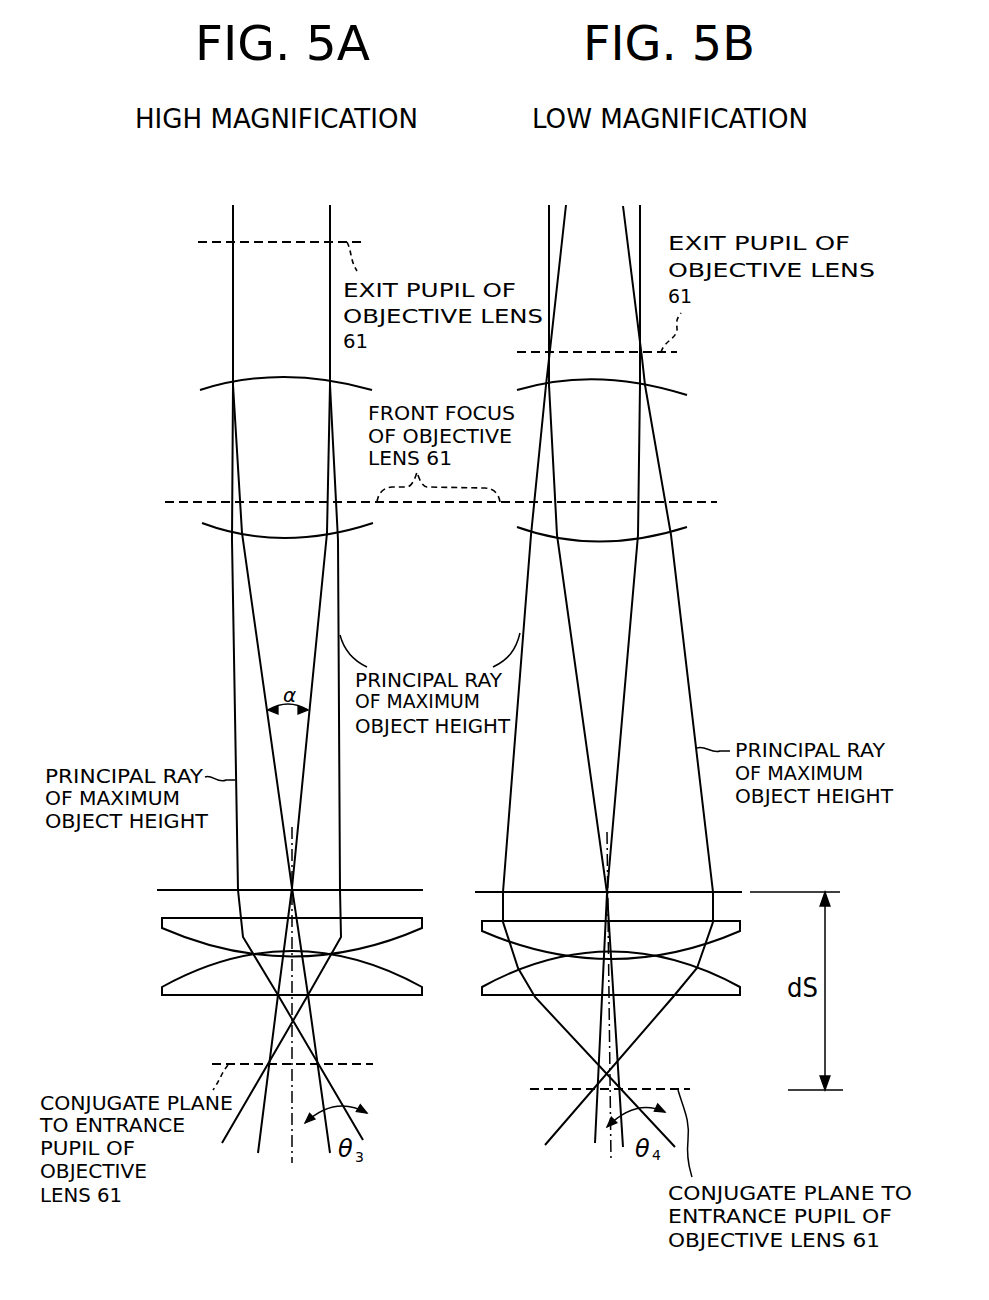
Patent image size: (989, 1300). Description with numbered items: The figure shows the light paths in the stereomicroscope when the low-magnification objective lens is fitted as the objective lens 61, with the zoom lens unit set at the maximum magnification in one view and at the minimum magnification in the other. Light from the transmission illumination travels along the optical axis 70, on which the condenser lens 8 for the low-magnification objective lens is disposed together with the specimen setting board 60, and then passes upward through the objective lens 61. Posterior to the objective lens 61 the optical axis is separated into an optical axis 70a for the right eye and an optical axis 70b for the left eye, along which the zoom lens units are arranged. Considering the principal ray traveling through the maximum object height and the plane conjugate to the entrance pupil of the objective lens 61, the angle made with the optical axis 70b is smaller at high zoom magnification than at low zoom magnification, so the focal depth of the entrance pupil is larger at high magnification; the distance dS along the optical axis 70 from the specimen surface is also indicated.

In FIG. 5A, the optical axis for right eye 70a is at (330, 352).
In FIG. 5B, the optical axis for right eye 70a is at (640, 222).
In FIG. 5A, the optical axis for left eye 70b is at (238, 352).
In FIG. 5B, the optical axis for left eye 70b is at (548, 268).
In FIG. 5A, the objective lens 61 is at (222, 417).
In FIG. 5B, the objective lens 61 is at (672, 420).
In FIG. 5A, the specimen setting board 60 is at (487, 890).
In FIG. 5B, the specimen setting board 60 is at (487, 890).
In FIG. 5A, the condenser lens for low-magnification objective lens 8 is at (488, 997).
In FIG. 5B, the condenser lens for low-magnification objective lens 8 is at (488, 997).
In FIG. 5A, the optical axis 70 is at (293, 1153).
In FIG. 5B, the optical axis 70 is at (612, 1158).